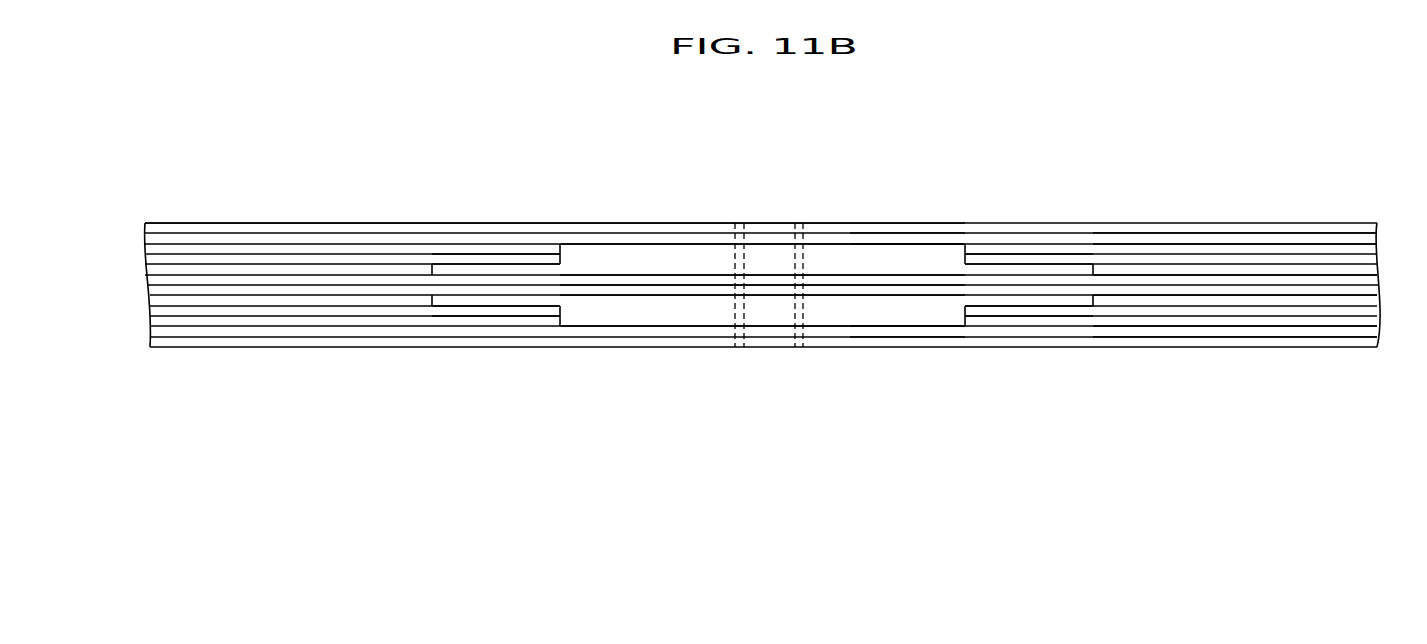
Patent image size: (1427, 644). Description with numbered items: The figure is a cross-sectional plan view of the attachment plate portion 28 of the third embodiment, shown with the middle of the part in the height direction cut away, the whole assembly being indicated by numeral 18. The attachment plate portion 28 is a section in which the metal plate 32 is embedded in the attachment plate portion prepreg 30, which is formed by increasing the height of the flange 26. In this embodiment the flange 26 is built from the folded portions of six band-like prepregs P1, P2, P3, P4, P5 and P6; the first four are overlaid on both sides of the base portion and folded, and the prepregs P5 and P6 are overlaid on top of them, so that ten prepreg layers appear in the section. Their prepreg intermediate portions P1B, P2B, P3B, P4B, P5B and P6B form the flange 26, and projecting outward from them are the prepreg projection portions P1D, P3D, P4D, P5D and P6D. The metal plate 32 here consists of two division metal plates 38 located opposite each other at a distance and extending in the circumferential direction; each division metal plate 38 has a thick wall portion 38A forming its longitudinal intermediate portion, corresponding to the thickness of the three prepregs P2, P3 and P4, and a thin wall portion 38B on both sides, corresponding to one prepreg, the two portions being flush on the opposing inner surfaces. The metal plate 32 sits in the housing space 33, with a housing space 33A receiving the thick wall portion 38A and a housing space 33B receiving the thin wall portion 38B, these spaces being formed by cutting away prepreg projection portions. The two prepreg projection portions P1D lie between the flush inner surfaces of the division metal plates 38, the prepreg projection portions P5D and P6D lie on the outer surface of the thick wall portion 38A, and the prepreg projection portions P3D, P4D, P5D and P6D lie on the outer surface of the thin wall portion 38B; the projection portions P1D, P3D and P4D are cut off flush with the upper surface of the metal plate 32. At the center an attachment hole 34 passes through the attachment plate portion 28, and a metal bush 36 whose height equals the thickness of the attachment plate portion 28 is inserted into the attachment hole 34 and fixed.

The laminated bus bar assembly 18 is at (635, 102).
The flange 26 is at (313, 223).
The attachment plate portion 28 is at (853, 223).
The attachment plate portion prepreg 30 is at (375, 214).
The metal plate 32 is at (762, 285).
The housing space 33 is at (817, 375).
The housing space 33A is at (858, 327).
The housing space 33B is at (1022, 303).
The attachment hole 34 is at (735, 313).
The metal bush 36 is at (793, 258).
The division metal plate 38 is at (675, 234).
The thick wall portion 38A is at (593, 243).
The thin wall portion 38B is at (483, 258).
The prepreg P1 is at (258, 280).
The prepreg P2 is at (237, 270).
The prepreg P3 is at (218, 262).
The prepreg P4 is at (203, 257).
The prepreg P5 is at (188, 241).
The prepreg P6 is at (173, 231).
The prepreg projection portion P1D is at (455, 281).
The prepreg projection portion P3D is at (507, 260).
The prepreg projection portion P4D is at (537, 248).
The prepreg projection portion P5D is at (913, 238).
The prepreg projection portion P6D is at (882, 228).
The prepreg intermediate portion P1B is at (1222, 282).
The prepreg intermediate portion P2B is at (1213, 272).
The prepreg intermediate portion P3B is at (1197, 262).
The prepreg intermediate portion P4B is at (1178, 252).
The prepreg intermediate portion P5B is at (1167, 238).
The prepreg intermediate portion P6B is at (1155, 228).